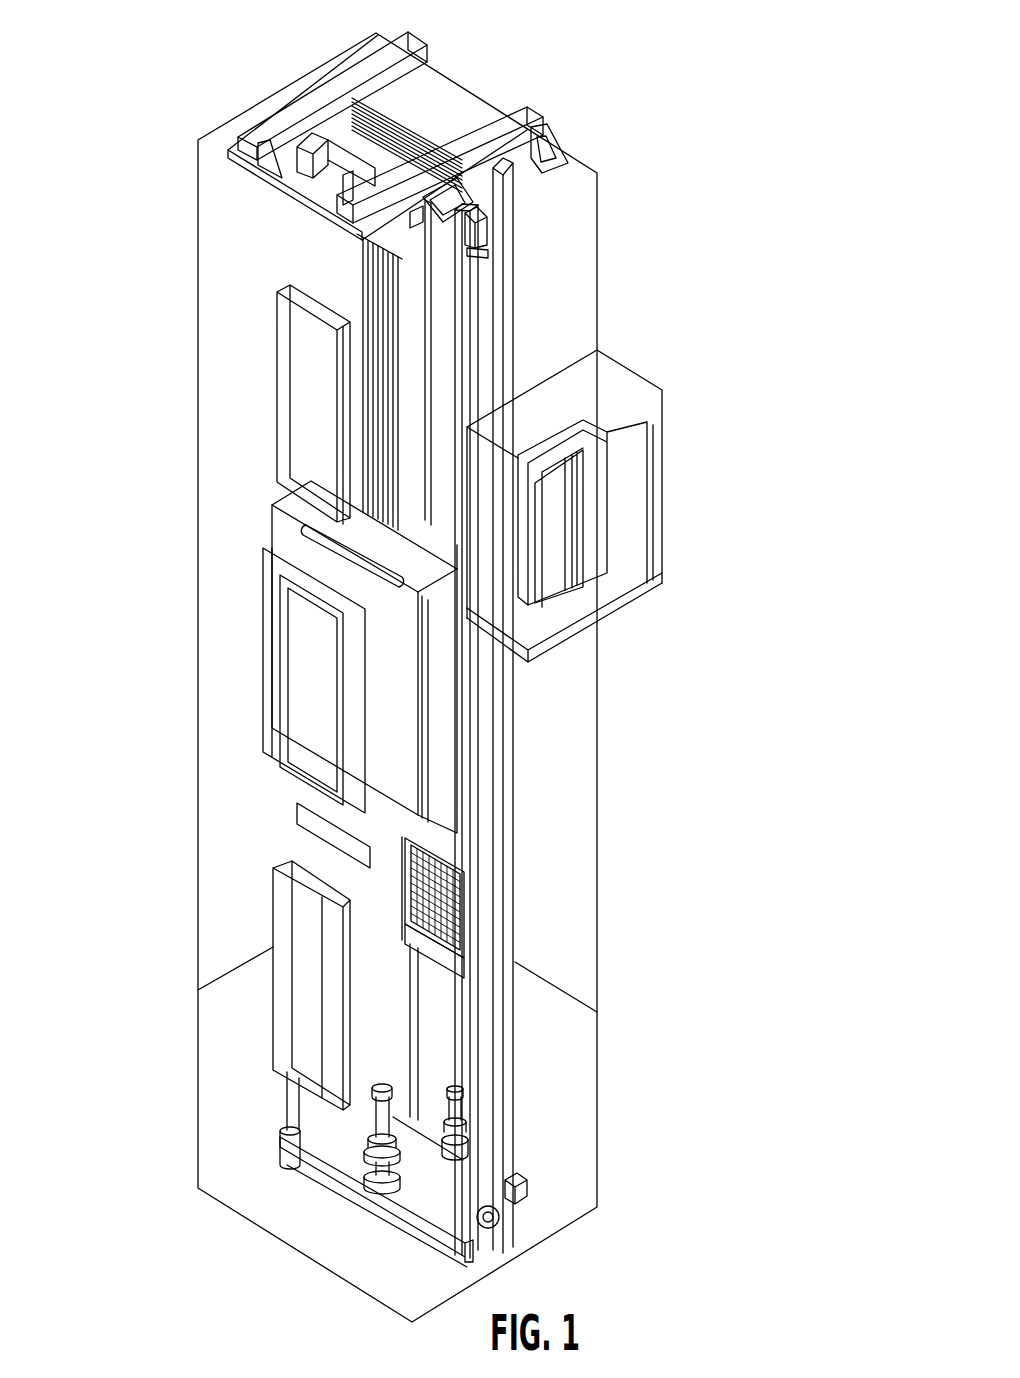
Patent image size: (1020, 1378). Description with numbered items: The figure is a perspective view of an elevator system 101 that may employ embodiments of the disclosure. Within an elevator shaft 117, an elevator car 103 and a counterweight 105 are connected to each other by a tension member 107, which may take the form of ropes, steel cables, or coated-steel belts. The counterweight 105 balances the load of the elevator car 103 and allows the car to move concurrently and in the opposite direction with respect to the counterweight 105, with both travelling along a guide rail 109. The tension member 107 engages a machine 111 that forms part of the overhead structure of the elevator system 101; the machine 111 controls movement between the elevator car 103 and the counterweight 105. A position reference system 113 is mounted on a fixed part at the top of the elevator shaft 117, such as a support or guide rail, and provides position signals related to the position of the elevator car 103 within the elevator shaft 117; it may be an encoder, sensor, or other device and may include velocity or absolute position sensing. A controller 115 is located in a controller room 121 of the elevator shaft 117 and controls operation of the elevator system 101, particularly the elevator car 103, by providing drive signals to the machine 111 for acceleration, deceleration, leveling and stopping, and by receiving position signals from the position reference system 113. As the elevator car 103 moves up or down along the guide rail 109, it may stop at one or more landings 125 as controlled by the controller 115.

The elevator system 101 is at (605, 66).
The elevator car 103 is at (397, 718).
The counterweight 105 is at (457, 913).
The tension member 107 is at (412, 392).
The guide rail 109 is at (487, 838).
The machine 111 is at (307, 138).
The position reference system 113 is at (485, 233).
The controller 115 is at (600, 522).
The elevator shaft 117 is at (250, 839).
The controller room 121 is at (680, 378).
The landings 125 is at (277, 394).